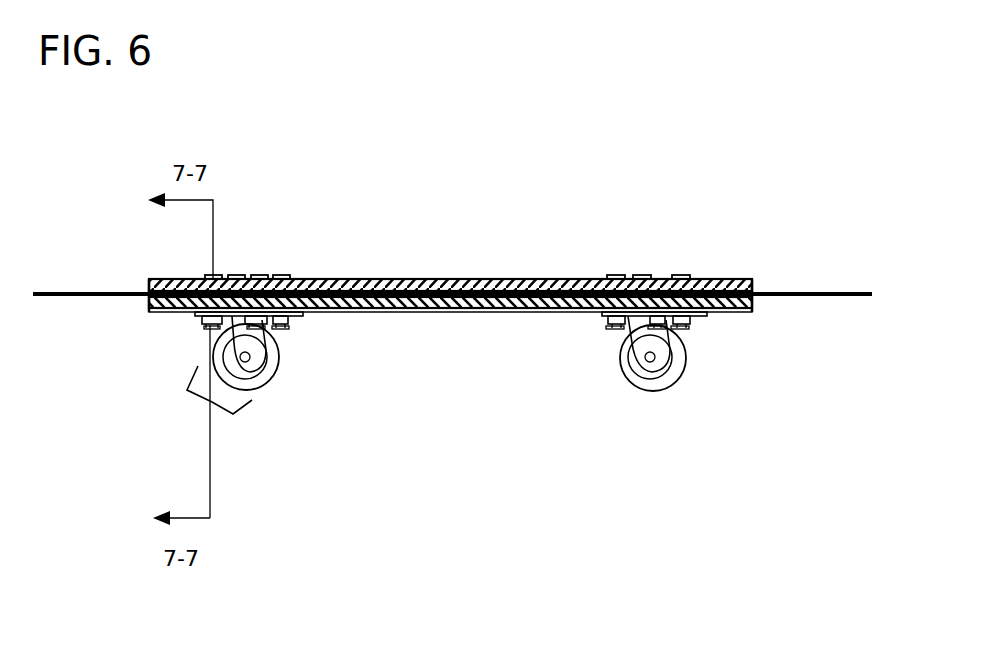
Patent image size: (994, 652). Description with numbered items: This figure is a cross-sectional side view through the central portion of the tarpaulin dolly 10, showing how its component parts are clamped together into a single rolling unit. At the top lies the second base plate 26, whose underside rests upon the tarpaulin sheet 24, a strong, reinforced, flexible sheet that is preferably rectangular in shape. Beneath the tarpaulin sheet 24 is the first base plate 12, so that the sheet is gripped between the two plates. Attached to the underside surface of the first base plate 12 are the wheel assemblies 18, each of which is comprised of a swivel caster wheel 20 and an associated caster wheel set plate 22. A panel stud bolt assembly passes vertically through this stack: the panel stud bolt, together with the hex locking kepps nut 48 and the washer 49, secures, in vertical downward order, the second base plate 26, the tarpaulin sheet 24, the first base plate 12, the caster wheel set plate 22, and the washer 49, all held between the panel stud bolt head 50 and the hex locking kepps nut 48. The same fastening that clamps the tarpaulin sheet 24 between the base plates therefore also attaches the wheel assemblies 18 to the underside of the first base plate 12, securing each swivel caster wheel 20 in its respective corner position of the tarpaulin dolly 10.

The tarpaulin dolly 10 is at (321, 440).
The first base plate 12 is at (712, 312).
The wheel assembly 18 is at (200, 423).
The swivel caster wheel 20 is at (643, 388).
The caster wheel set plate 22 is at (605, 313).
The tarpaulin sheet 24 is at (830, 292).
The second base plate 26 is at (708, 279).
The hex locking kepps nut 48 is at (613, 323).
The washer 49 is at (607, 318).
The panel stud bolt head 50 is at (259, 274).